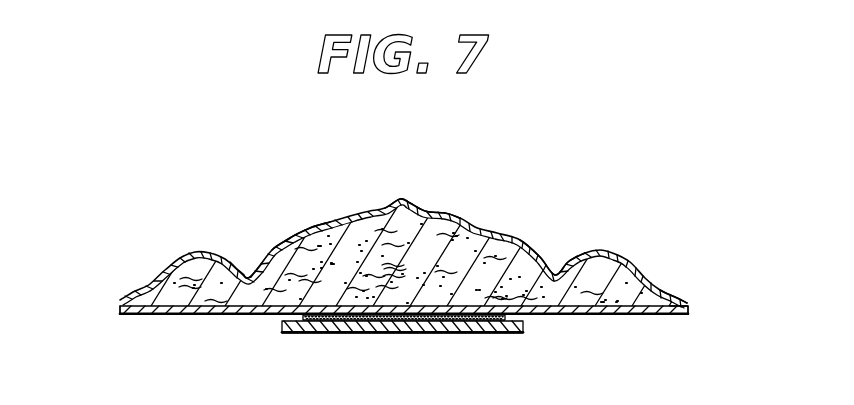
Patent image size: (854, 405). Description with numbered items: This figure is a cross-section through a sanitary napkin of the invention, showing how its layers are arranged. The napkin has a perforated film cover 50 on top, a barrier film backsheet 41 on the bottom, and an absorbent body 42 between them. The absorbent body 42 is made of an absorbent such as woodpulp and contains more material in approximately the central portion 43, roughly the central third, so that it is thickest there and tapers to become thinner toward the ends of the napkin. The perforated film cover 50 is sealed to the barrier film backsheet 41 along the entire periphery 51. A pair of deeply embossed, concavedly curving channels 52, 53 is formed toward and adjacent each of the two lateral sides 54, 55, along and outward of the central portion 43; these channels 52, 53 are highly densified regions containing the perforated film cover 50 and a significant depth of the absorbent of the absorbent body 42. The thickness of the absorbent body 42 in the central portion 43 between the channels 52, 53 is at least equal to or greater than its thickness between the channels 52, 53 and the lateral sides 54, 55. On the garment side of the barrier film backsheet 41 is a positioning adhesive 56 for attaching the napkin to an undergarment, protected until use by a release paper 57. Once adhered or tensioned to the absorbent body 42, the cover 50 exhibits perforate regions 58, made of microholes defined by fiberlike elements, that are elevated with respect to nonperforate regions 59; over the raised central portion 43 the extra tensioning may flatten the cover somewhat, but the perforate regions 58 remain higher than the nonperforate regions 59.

The barrier film backsheet 41 is at (653, 315).
The absorbent body 42 is at (548, 292).
The central portion 43 is at (460, 242).
The perforated film cover 50 is at (538, 258).
The periphery 51 is at (688, 307).
The deeply embossed concavedly curving channel 52 is at (245, 272).
The deeply embossed concavedly curving channel 53 is at (559, 270).
The lateral side 54 is at (120, 306).
The lateral side 55 is at (687, 303).
The positioning adhesive 56 is at (333, 318).
The release paper 57 is at (413, 333).
The perforate regions 58 is at (313, 228).
The nonperforate regions 59 is at (463, 213).